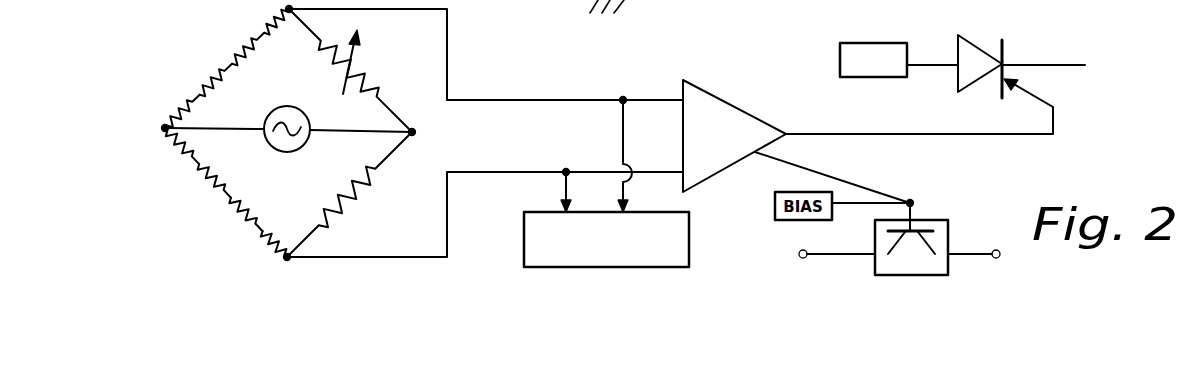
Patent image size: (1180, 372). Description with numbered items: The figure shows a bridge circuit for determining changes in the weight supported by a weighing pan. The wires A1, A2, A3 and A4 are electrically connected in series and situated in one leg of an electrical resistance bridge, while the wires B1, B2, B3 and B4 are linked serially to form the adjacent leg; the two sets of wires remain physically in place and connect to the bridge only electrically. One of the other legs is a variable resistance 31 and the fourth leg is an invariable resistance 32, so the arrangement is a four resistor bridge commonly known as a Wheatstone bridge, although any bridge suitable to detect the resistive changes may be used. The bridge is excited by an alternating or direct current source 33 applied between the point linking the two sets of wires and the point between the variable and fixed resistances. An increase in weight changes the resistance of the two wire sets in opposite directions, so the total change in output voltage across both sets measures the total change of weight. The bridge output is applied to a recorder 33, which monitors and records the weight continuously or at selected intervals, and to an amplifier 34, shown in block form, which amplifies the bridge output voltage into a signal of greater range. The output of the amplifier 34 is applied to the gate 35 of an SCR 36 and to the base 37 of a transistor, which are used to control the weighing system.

The wire A1 is at (175, 108).
The wire A2 is at (207, 74).
The wire A3 is at (238, 43).
The wire A4 is at (267, 17).
The wire B1 is at (172, 150).
The wire B2 is at (201, 183).
The wire B3 is at (232, 215).
The wire B4 is at (257, 247).
The variable resistance 31 is at (355, 58).
The invariable resistance 32 is at (350, 213).
The source / recorder 33 is at (300, 92).
The amplifier 34 is at (775, 101).
The gate 35 is at (1053, 126).
The SCR 36 is at (1008, 24).
The base 37 is at (928, 221).